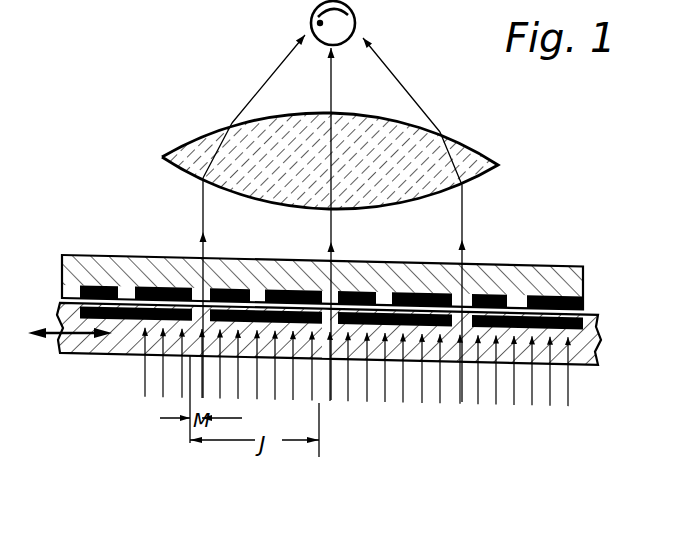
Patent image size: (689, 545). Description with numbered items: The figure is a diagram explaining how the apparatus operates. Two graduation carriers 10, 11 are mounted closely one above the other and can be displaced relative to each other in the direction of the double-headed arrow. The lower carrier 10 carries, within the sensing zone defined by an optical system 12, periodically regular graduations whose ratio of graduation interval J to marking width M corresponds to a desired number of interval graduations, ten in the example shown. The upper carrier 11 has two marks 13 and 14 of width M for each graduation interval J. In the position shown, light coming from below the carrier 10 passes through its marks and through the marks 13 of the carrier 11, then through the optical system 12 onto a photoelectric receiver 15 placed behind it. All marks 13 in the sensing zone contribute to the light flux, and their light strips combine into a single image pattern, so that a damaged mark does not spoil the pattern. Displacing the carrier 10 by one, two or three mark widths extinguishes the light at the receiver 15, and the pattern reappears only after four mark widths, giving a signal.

The graduation carrier 10 is at (92, 345).
The graduation carrier 11 is at (82, 263).
The optical system 12 is at (468, 153).
The marks 13 is at (67, 290).
The marks 14 is at (127, 288).
The photoelectric receiver 15 is at (355, 21).